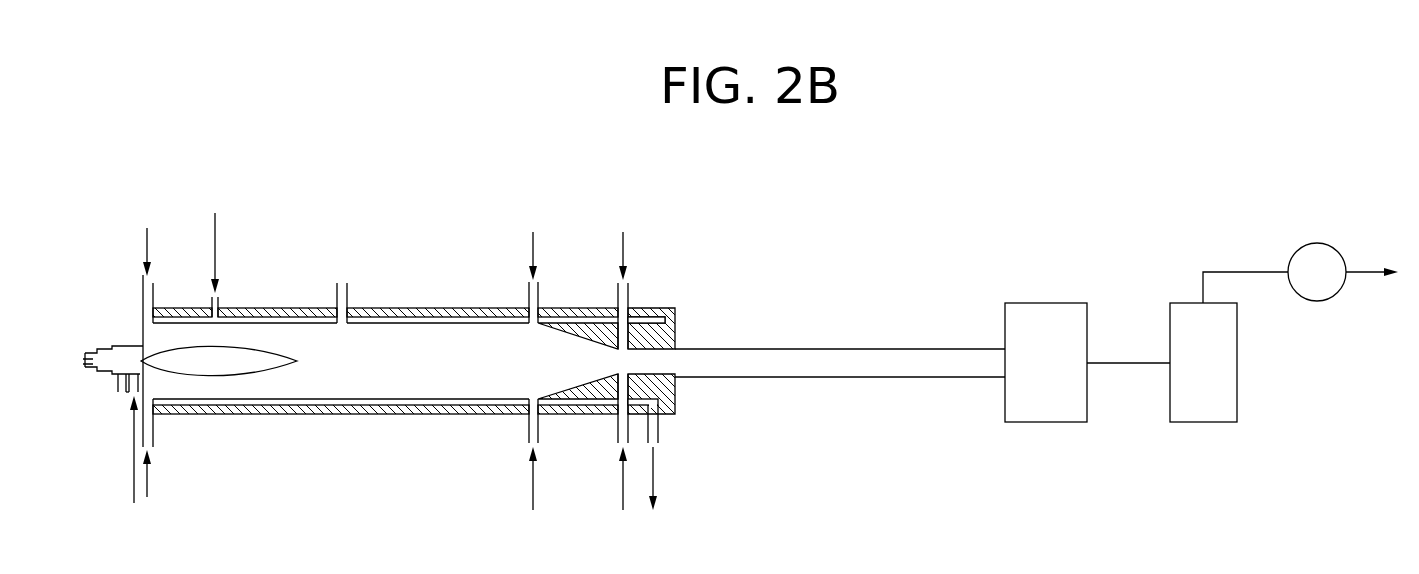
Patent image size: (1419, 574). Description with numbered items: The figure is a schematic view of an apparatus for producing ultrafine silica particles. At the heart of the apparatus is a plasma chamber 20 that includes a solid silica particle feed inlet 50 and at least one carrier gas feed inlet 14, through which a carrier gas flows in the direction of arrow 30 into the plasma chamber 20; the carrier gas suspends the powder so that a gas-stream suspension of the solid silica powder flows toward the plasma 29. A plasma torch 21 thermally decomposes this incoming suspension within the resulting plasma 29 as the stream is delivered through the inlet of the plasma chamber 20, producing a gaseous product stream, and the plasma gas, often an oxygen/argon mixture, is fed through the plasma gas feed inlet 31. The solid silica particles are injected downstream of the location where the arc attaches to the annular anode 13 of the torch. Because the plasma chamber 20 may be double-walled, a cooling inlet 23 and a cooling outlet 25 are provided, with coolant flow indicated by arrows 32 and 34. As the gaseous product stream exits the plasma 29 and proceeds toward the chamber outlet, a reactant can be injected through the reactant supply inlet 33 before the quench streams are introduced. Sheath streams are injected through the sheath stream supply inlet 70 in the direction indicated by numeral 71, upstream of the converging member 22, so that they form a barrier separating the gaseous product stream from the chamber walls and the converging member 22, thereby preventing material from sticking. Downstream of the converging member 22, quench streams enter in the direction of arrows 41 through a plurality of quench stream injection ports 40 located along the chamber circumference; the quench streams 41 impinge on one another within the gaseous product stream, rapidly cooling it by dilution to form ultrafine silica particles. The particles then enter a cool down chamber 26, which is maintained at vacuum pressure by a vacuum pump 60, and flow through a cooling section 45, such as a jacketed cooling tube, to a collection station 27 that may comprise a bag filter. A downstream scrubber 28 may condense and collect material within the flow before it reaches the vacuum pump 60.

The annular anode 13 is at (128, 345).
The carrier gas feed inlet 14 is at (128, 395).
The plasma chamber 20 is at (357, 450).
The plasma torch 21 is at (166, 307).
The converging member 22 is at (545, 331).
The cooling inlet 23 is at (220, 300).
The cooling outlet 25 is at (665, 428).
The cool down chamber 26 is at (675, 342).
The collection station 27 is at (1030, 379).
The scrubber 28 is at (1187, 379).
The plasma 29 is at (225, 364).
The carrier gas flow direction arrow 30 is at (134, 465).
The plasma gas feed inlet 31 is at (88, 353).
The coolant flow arrow 32 is at (215, 228).
The reactant supply inlet 33 is at (348, 295).
The coolant flow arrow 34 is at (656, 475).
The quench stream injection ports 40 is at (618, 292).
The quench streams 41 is at (625, 240).
The cooling section 45 is at (923, 349).
The solid silica particle feed inlet 50 is at (115, 388).
The vacuum pump 60 is at (1300, 243).
The sheath stream supply inlet 70 is at (143, 286).
The sheath stream flow direction 71 is at (147, 242).